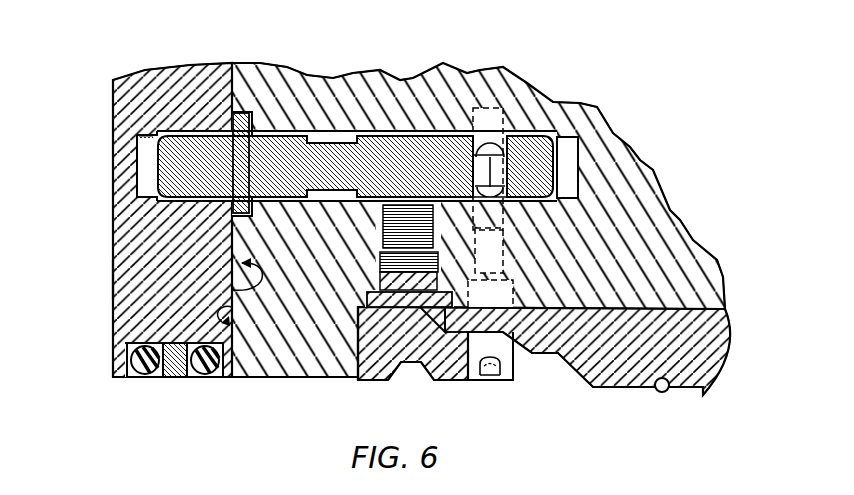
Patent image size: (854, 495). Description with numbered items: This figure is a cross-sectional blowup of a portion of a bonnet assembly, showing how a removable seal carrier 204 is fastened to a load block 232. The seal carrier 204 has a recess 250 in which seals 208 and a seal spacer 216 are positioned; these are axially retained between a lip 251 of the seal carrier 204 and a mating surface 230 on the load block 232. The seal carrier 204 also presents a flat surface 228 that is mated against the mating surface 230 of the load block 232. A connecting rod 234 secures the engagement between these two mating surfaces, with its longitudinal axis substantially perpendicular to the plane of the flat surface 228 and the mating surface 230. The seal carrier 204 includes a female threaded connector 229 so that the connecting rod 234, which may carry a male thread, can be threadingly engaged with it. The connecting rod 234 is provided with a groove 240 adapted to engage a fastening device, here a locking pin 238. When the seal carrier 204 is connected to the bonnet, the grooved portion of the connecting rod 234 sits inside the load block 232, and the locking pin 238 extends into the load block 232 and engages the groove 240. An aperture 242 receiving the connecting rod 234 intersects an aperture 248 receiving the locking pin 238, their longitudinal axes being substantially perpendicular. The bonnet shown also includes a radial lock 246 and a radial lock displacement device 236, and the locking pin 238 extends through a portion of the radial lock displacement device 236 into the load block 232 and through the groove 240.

The seal carrier 204 is at (170, 80).
The seals 208 is at (142, 378).
The seal spacer 216 is at (175, 378).
The flat surface 228 is at (232, 297).
The female threaded connector 229 is at (143, 170).
The mating surface 230 is at (290, 378).
The load block 232 is at (653, 200).
The connecting rod 234 is at (284, 163).
The radial lock displacement device 236 is at (720, 358).
The locking pin 238 is at (512, 368).
The groove 240 is at (475, 145).
The aperture 242 is at (560, 167).
The radial lock 246 is at (400, 370).
The aperture 248 is at (513, 287).
The recess 250 is at (172, 343).
The lip 251 is at (113, 278).